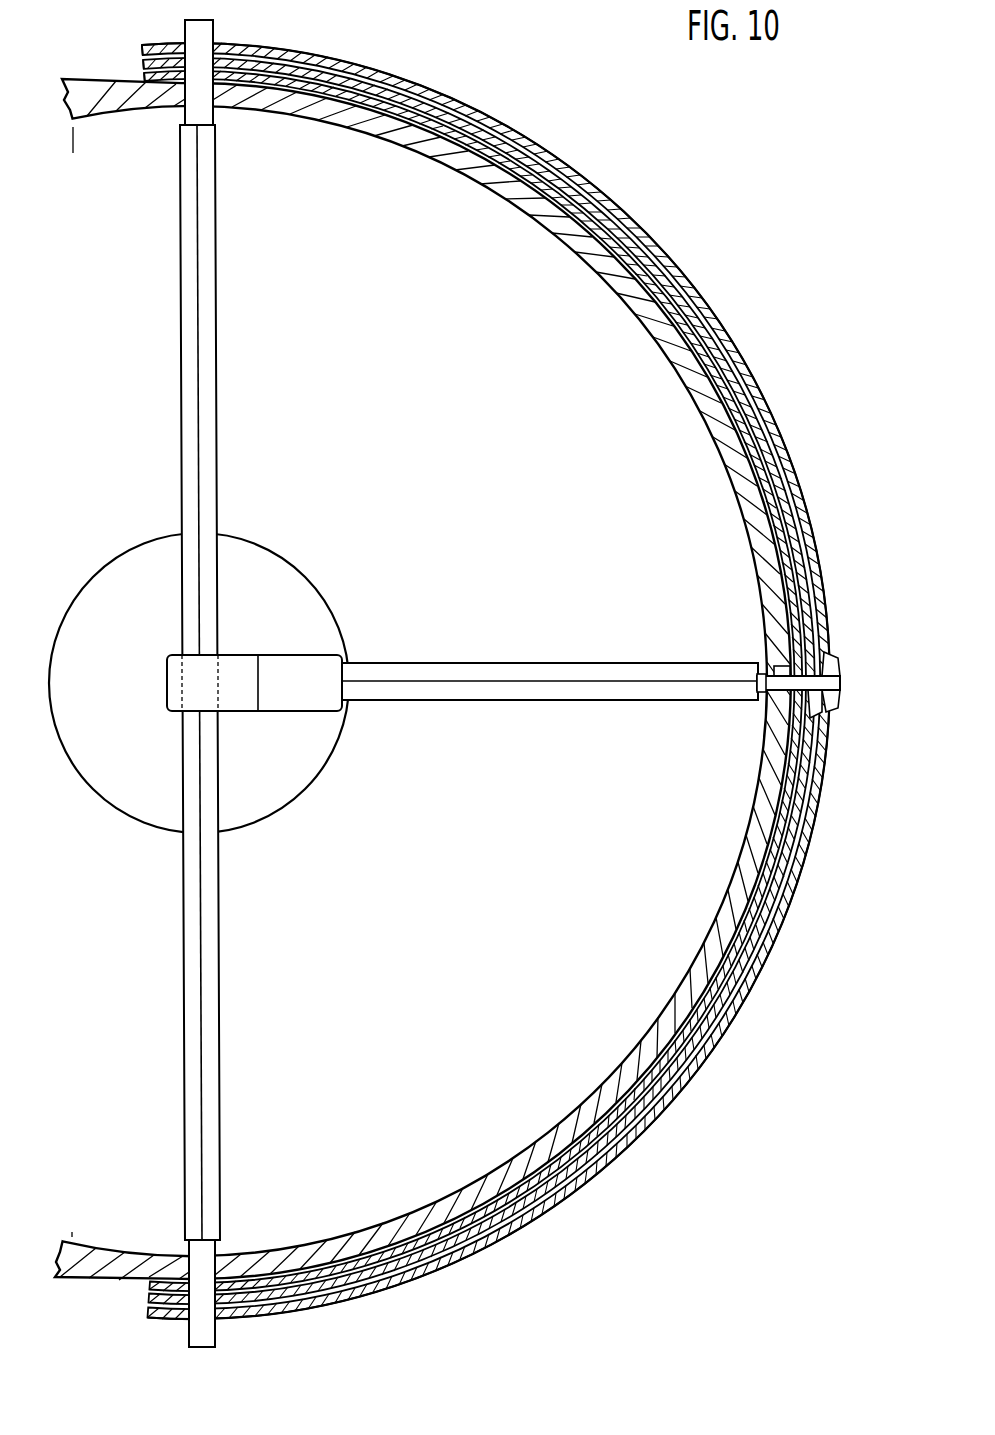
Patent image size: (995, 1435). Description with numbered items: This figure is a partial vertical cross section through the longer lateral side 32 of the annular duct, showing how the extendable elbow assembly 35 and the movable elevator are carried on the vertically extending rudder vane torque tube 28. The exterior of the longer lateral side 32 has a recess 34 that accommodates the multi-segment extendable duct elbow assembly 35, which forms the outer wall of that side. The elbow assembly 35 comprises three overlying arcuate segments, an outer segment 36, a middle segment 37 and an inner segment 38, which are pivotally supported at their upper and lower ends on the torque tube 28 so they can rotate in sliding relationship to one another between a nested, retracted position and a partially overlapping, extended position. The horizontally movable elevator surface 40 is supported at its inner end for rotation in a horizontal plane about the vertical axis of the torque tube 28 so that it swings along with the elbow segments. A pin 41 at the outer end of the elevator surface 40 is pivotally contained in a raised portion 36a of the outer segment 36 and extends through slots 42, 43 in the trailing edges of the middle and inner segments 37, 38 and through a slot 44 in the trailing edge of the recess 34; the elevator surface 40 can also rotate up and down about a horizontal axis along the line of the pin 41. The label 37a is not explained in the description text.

The rudder vane torque tube 28 is at (203, 35).
The longer lateral side of the duct 32 is at (102, 93).
The recess 34 is at (135, 70).
The multi-segment extendable duct elbow assembly 35 is at (561, 156).
The outer segment 36 is at (643, 243).
The middle segment 37 is at (680, 282).
The inner segment 38 is at (712, 325).
The horizontally movable elevator surface 40 is at (563, 662).
The pin 41 is at (840, 680).
The slot 42 is at (829, 664).
The slot 43 is at (779, 672).
The slot 44 is at (757, 680).
The raised portion of the outer elbow segment 36a is at (838, 701).
The intermediate layer end portion 37a is at (826, 716).